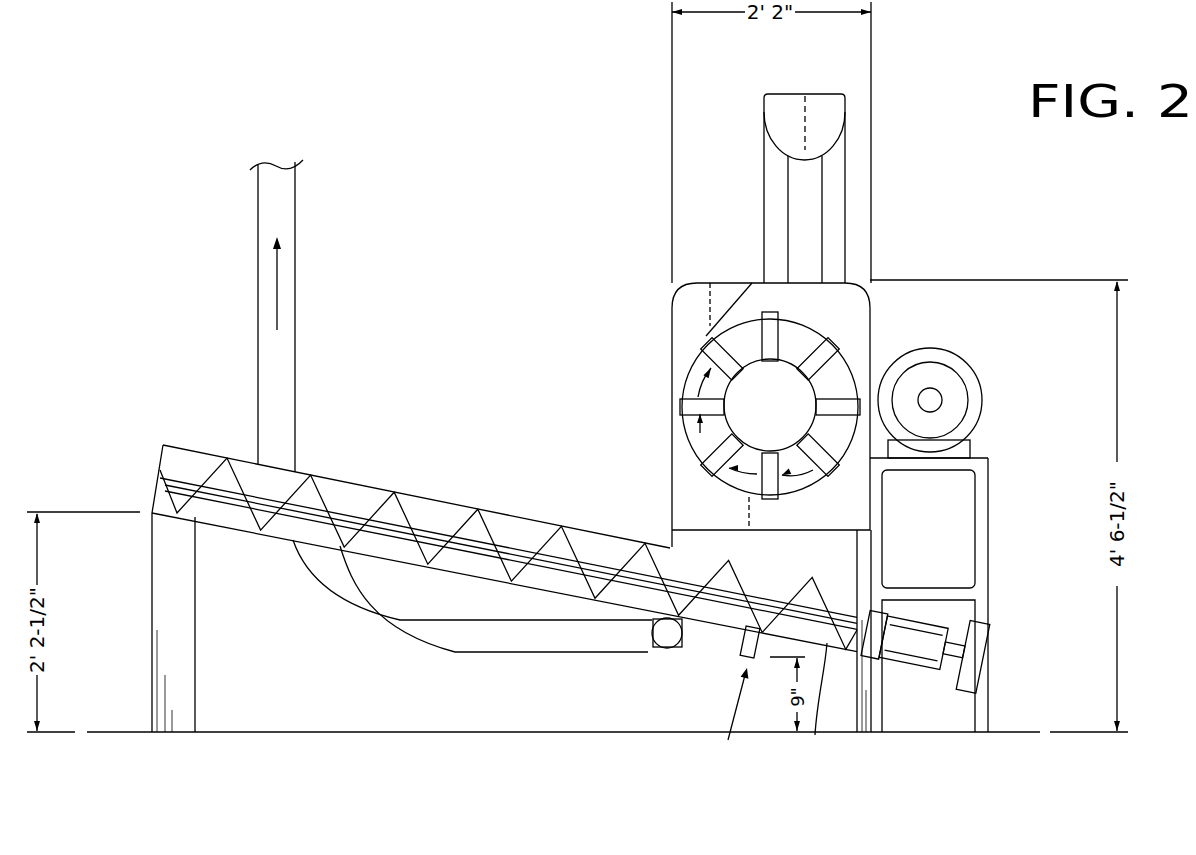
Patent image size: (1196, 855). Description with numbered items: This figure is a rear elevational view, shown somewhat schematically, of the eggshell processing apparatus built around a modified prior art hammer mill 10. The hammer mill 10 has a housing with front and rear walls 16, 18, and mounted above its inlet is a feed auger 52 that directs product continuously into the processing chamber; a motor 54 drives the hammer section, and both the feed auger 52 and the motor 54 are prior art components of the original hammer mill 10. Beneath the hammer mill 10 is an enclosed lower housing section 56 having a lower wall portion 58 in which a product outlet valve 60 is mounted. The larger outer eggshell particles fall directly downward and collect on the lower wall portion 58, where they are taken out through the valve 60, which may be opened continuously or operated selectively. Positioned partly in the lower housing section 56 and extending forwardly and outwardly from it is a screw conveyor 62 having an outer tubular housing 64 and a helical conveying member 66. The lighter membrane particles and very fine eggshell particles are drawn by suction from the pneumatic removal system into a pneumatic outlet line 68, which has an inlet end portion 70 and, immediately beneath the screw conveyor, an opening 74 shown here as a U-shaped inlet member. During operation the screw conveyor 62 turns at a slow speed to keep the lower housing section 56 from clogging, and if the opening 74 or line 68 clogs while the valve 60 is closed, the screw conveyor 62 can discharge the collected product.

The hammer mill 10 is at (872, 332).
The front wall 16 is at (672, 352).
The rear wall 18 is at (873, 347).
The feed auger 52 is at (837, 193).
The motor 54 is at (970, 382).
The lower housing section 56 is at (712, 632).
The lower wall portion 58 is at (815, 735).
The product outlet valve 60 is at (740, 645).
The screw conveyor 62 is at (485, 500).
The outer tubular housing 64 is at (445, 500).
The helical conveying member 66 is at (378, 486).
The pneumatic outlet line 68 is at (288, 356).
The inlet end portion 70 is at (627, 638).
The opening 74 is at (663, 647).